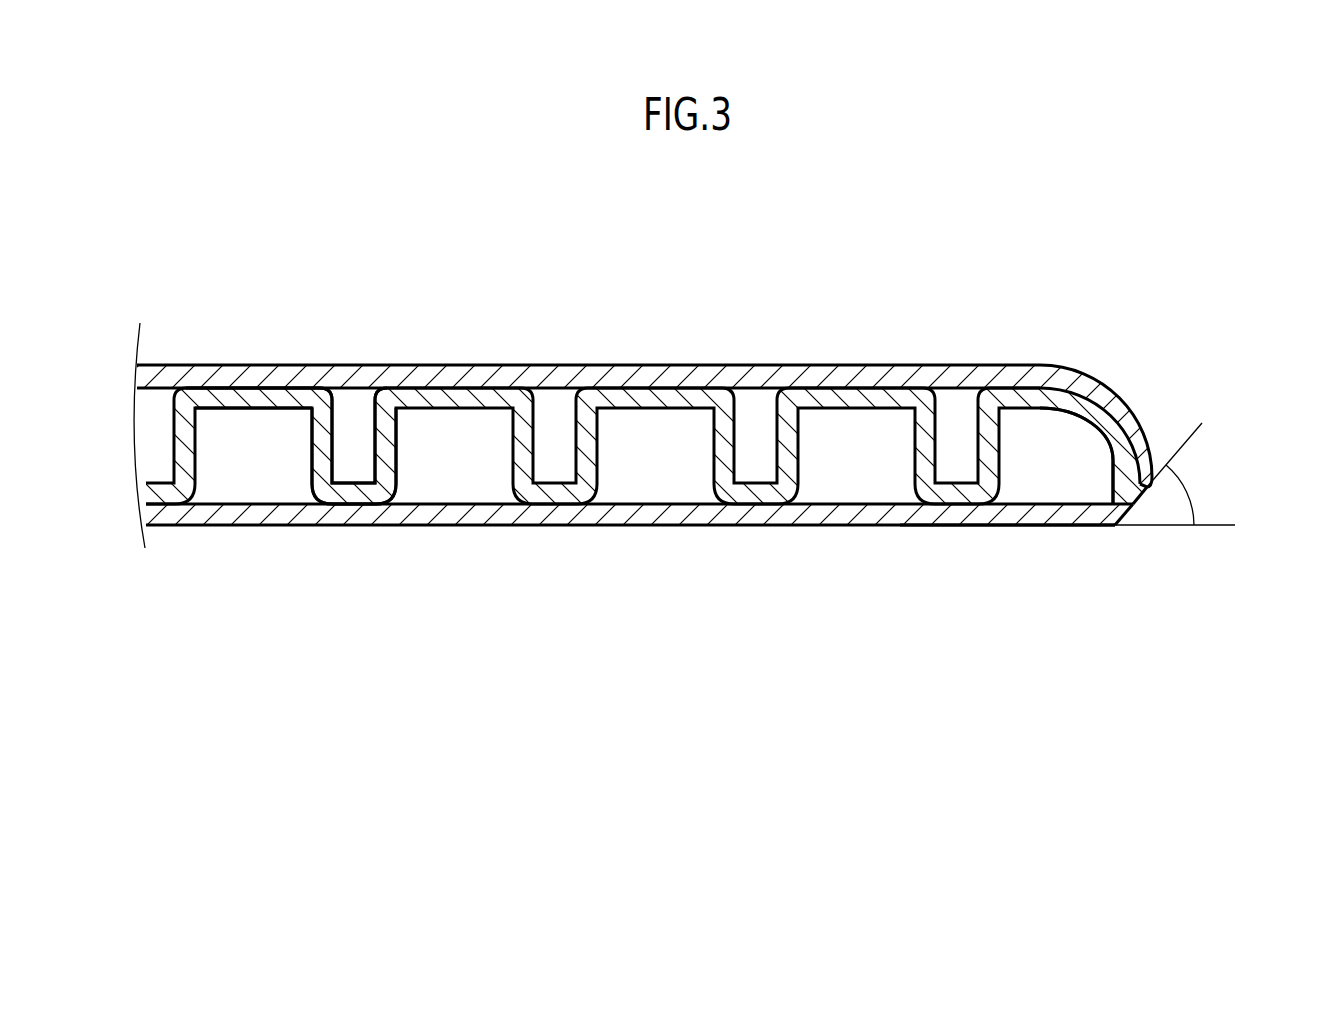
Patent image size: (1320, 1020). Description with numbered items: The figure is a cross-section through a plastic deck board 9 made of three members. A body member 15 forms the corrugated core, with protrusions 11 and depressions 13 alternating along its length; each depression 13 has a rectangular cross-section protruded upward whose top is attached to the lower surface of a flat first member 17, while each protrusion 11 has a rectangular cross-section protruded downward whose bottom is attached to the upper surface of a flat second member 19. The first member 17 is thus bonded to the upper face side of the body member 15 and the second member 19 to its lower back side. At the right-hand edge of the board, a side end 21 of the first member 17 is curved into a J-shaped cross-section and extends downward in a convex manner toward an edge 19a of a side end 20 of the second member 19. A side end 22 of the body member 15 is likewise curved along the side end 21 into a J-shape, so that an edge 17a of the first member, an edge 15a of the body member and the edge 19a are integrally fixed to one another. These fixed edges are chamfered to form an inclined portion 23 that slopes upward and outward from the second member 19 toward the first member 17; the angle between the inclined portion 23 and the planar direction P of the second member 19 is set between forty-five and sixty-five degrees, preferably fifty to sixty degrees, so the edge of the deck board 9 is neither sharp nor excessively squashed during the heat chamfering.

The deck board 9 is at (768, 361).
The protrusion 11 is at (350, 476).
The depression 13 is at (263, 398).
The body member 15 is at (373, 627).
The edge of side end of body member 15a is at (1138, 500).
The first member 17 is at (472, 373).
The edge of side end of first member 17a is at (1168, 463).
The second member 19 is at (805, 513).
The edge of side end of second member 19a is at (1121, 515).
The side end of second member 20 is at (1030, 513).
The side end of first member 21 is at (1053, 312).
The side end of body member 22 is at (1110, 485).
The inclined portion 23 is at (1148, 490).
The planar direction of second member P is at (1218, 525).